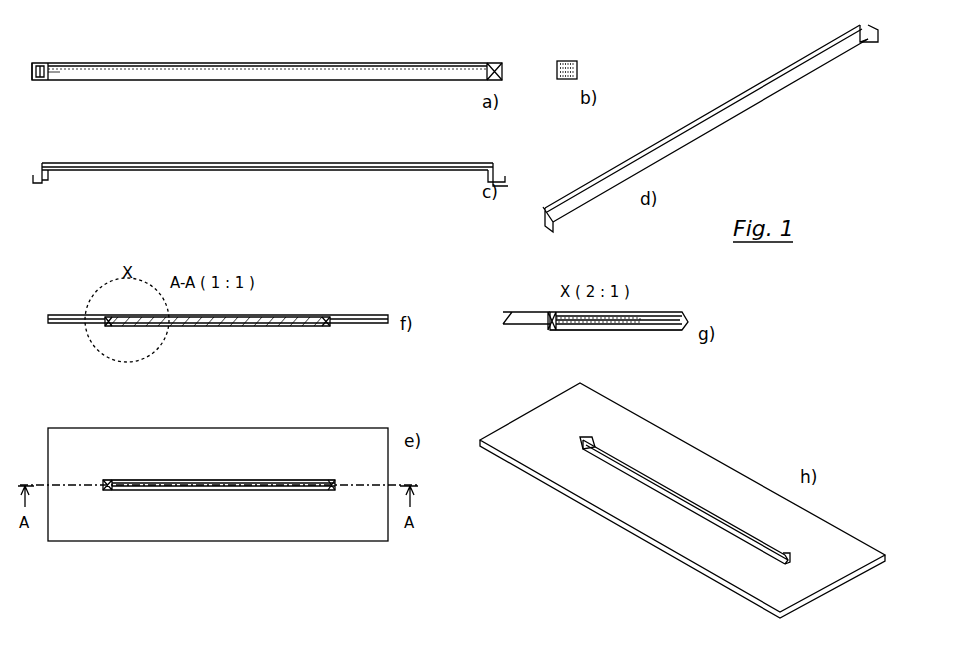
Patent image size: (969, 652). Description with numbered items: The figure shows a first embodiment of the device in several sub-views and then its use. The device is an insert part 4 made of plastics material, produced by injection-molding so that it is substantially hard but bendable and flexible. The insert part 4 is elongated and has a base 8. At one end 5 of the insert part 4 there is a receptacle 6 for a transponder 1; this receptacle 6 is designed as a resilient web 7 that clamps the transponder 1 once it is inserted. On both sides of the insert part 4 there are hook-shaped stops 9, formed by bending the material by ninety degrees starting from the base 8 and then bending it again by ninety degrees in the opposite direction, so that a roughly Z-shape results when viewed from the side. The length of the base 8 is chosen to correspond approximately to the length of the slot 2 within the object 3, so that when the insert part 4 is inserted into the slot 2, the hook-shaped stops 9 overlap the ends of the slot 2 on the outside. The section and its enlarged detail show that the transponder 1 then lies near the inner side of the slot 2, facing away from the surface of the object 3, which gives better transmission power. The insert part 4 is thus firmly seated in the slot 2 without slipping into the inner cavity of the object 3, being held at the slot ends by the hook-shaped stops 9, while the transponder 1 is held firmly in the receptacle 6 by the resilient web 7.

The transponder 1 is at (645, 312).
The slot 2 is at (330, 482).
The object 3 is at (370, 315).
The insert part 4 is at (298, 82).
The end 5 is at (52, 82).
The receptacle 6 is at (75, 170).
The resilient web 7 is at (68, 80).
The base 8 is at (238, 82).
The hook-shaped stops 9 is at (40, 82).